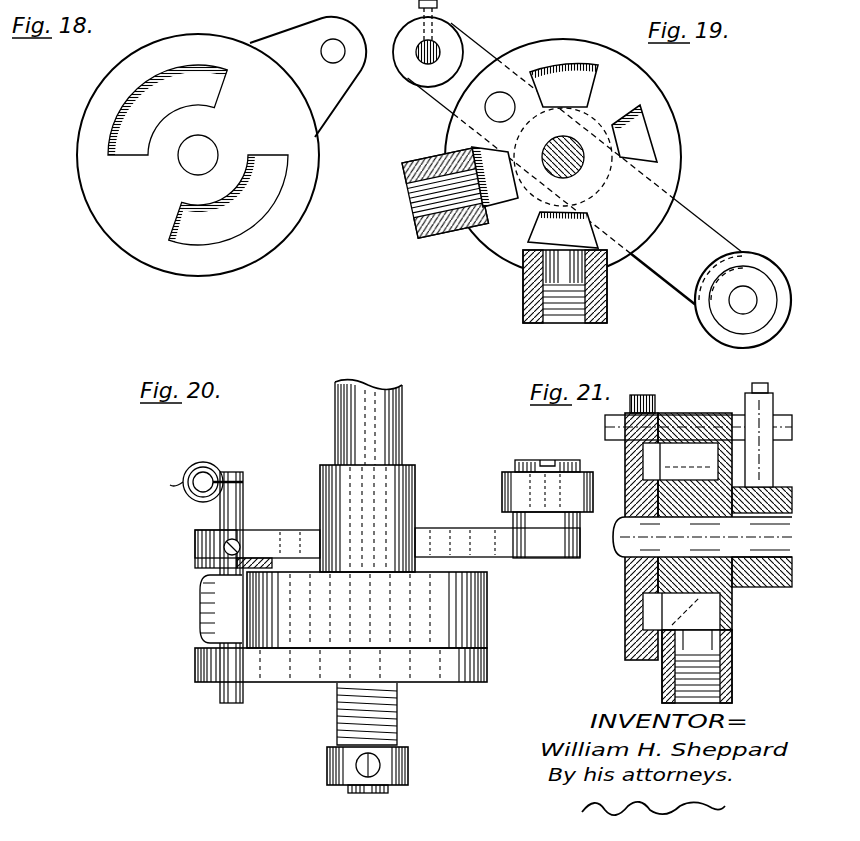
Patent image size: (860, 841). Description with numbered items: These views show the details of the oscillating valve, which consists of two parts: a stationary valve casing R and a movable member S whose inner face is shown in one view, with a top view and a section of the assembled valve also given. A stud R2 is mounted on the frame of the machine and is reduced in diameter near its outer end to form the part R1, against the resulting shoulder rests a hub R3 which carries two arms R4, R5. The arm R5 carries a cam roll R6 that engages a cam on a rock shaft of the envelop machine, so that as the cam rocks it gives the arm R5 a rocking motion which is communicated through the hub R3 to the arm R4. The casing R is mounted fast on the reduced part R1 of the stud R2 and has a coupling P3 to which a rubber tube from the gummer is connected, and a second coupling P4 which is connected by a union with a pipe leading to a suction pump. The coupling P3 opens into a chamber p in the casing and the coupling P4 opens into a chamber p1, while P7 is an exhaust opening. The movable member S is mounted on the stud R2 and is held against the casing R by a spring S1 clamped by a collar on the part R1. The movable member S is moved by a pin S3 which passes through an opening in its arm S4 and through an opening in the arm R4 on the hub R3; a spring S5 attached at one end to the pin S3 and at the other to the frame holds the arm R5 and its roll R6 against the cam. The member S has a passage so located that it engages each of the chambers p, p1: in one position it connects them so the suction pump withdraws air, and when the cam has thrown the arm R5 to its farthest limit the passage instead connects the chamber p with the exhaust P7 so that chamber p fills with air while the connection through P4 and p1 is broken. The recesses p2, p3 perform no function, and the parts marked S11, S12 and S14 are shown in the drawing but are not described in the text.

In FIG. 18, the movable member S is at (228, 200).
In FIG. 21, the movable member S is at (641, 536).
In FIG. 18, the spring S1 is at (199, 38).
In FIG. 20, the spring S1 is at (485, 674).
In FIG. 21, the spring S1 is at (612, 629).
In FIG. 19, the pin S3 is at (427, 63).
In FIG. 20, the pin S3 is at (243, 512).
In FIG. 21, the pin S3 is at (605, 422).
In FIG. 18, the arm S4 is at (167, 110).
In FIG. 21, the arm S4 is at (651, 395).
In FIG. 20, the spring S5 is at (206, 462).
In FIG. 20, the threaded screw S11 is at (399, 735).
In FIG. 20, the nut S12 is at (410, 767).
In FIG. 18, the arm of disk S14 is at (336, 109).
In FIG. 20, the arm of disk S14 is at (204, 683).
In FIG. 19, the valve casing R is at (686, 140).
In FIG. 20, the valve casing R is at (485, 612).
In FIG. 21, the valve casing R is at (691, 414).
In FIG. 19, the reduced part of stud R1 is at (579, 168).
In FIG. 20, the reduced part of stud R1 is at (368, 794).
In FIG. 21, the reduced part of stud R1 is at (619, 560).
In FIG. 20, the stud R2 is at (393, 366).
In FIG. 20, the hub R3 is at (416, 492).
In FIG. 21, the hub R3 is at (752, 588).
In FIG. 19, the arm R4 is at (477, 47).
In FIG. 20, the arm R4 is at (287, 530).
In FIG. 21, the arm R4 is at (770, 396).
In FIG. 19, the arm R5 is at (700, 240).
In FIG. 20, the arm R5 is at (463, 531).
In FIG. 19, the cam roll R6 is at (726, 338).
In FIG. 20, the cam roll R6 is at (503, 470).
In FIG. 19, the coupling P3 is at (420, 216).
In FIG. 20, the coupling P3 is at (200, 611).
In FIG. 21, the coupling P3 is at (630, 648).
In FIG. 19, the second coupling P4 is at (605, 316).
In FIG. 21, the second coupling P4 is at (662, 688).
In FIG. 19, the exhaust opening P7 is at (497, 99).
In FIG. 21, the exhaust opening P7 is at (716, 468).
In FIG. 19, the chamber p is at (495, 177).
In FIG. 19, the chamber p1 is at (563, 230).
In FIG. 21, the chamber p1 is at (686, 611).
In FIG. 19, the recess p2 is at (564, 85).
In FIG. 21, the recess p2 is at (680, 461).
In FIG. 19, the recess p3 is at (634, 133).